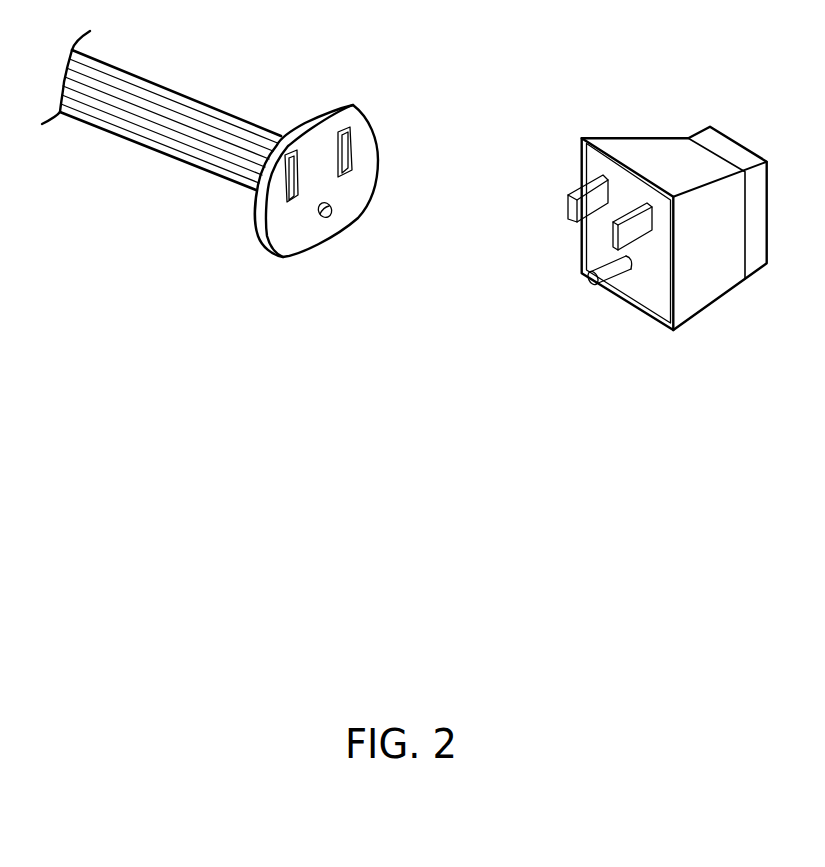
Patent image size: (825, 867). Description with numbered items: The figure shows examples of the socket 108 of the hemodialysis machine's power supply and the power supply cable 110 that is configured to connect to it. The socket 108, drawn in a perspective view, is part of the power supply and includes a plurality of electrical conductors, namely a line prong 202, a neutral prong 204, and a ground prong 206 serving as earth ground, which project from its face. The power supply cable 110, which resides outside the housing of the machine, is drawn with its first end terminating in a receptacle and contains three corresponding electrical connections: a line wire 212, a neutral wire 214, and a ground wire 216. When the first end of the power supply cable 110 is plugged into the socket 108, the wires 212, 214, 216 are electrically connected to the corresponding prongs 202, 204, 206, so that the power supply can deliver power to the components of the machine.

The socket 108 is at (640, 148).
The power supply cable 110 is at (205, 100).
The line prong 202 is at (613, 233).
The neutral prong 204 is at (578, 187).
The ground prong 206 is at (606, 279).
The line wire 212 is at (168, 145).
The neutral wire 214 is at (258, 138).
The ground wire 216 is at (127, 106).